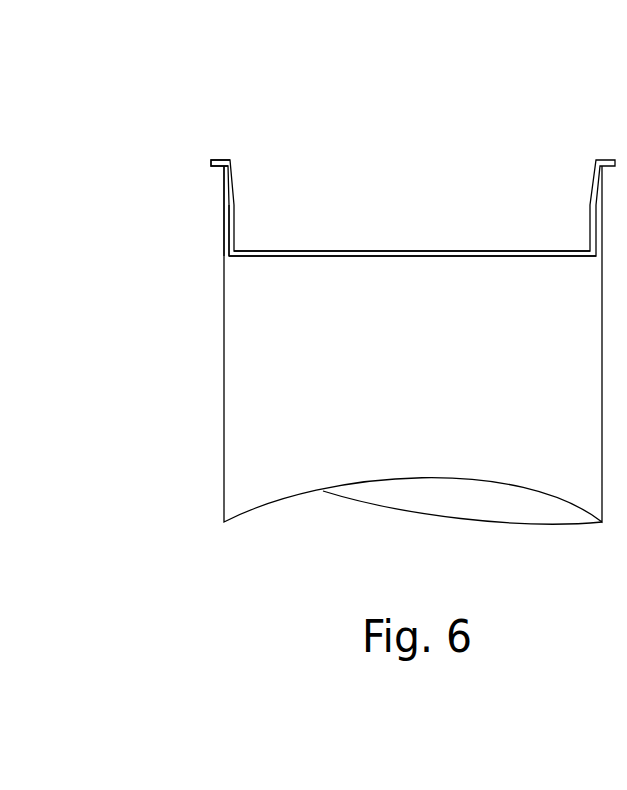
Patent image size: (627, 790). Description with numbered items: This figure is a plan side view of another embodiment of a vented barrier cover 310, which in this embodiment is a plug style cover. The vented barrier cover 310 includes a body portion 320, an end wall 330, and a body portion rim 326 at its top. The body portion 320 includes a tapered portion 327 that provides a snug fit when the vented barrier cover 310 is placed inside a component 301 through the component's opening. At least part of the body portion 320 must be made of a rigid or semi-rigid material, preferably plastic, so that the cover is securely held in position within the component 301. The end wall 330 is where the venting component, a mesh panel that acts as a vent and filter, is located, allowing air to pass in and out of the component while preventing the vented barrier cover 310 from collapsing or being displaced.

The component 301 is at (223, 408).
The vented barrier cover 310 is at (405, 203).
The body portion 320 is at (235, 220).
The body portion rim 326 is at (215, 160).
The tapered portion 327 is at (227, 195).
The end wall 330 is at (524, 258).